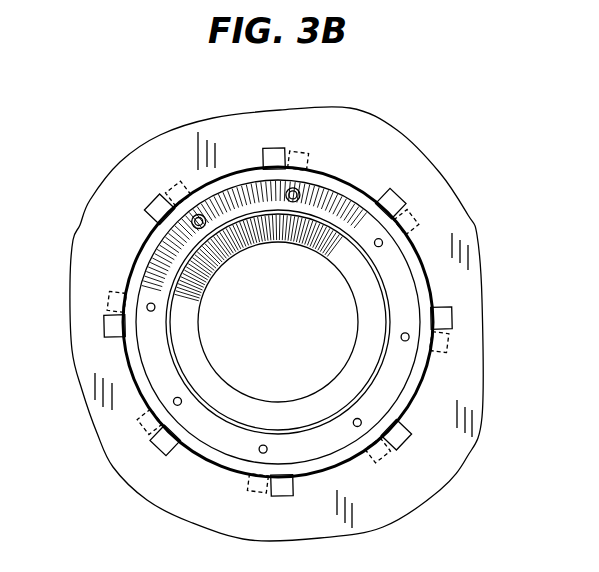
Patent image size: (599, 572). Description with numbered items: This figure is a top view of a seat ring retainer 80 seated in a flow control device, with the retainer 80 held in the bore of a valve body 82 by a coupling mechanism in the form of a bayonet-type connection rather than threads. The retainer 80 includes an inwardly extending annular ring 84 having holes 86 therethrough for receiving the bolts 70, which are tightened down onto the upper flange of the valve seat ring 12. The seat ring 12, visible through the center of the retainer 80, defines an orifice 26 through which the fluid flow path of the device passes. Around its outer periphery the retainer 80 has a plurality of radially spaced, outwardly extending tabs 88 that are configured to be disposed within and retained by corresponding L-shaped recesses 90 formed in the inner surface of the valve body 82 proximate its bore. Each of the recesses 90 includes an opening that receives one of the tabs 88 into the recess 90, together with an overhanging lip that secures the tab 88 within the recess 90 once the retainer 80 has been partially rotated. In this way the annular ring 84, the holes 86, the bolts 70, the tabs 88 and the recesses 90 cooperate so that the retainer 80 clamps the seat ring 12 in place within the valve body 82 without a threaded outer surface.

The valve seat ring 12 is at (288, 412).
The orifice 26 is at (262, 398).
The bolts 70 is at (287, 188).
The retainer 80 is at (428, 304).
The valve body 82 is at (470, 387).
The annular ring 84 is at (166, 250).
The holes 86 is at (174, 398).
The tabs 88 is at (310, 152).
The L-shaped recesses 90 is at (275, 158).